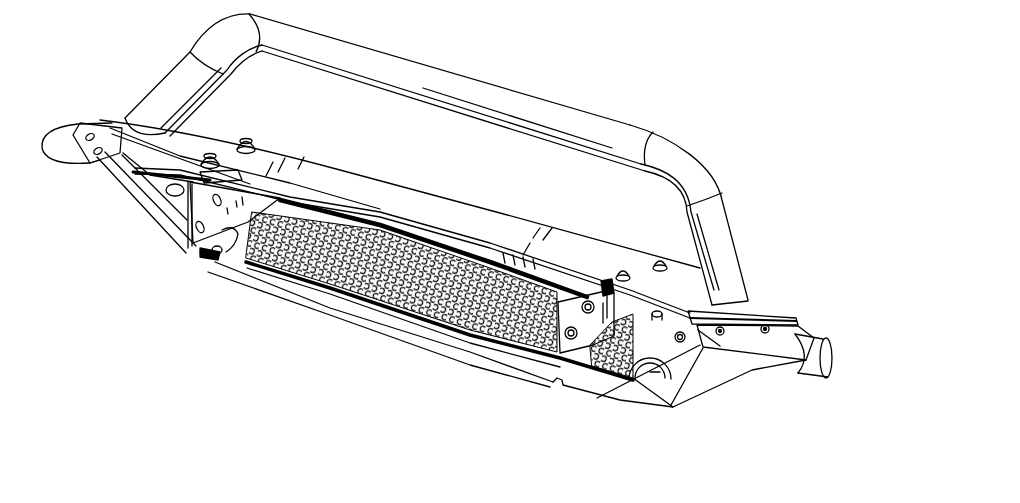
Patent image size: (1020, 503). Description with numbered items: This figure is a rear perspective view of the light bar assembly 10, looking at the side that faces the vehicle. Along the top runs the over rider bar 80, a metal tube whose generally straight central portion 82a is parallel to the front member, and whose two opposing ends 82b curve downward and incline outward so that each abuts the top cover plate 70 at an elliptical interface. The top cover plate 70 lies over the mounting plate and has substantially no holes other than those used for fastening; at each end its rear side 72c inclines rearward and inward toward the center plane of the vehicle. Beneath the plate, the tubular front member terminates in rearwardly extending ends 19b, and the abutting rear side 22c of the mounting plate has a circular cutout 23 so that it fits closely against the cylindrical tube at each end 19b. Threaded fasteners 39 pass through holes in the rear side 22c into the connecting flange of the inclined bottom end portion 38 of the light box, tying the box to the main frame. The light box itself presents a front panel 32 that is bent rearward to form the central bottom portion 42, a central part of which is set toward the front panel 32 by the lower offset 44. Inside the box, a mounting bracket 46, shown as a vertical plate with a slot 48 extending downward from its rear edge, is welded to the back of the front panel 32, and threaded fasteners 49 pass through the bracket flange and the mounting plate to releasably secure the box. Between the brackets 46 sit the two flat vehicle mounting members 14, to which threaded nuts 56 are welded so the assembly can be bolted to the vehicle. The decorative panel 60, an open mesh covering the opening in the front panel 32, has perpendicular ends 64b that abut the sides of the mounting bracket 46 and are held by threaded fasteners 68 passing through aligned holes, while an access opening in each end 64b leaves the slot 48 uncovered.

The light bar assembly 10 is at (683, 75).
The vehicle mounting member 14 is at (203, 212).
The rearwardly extending end of the front member 19b is at (824, 336).
The rear side of the mounting plate 22c is at (750, 344).
The circular cutout 23 is at (810, 370).
The front panel 32 is at (320, 303).
The inclined bottom end portion 38 is at (150, 195).
The threaded fastener 39 is at (771, 328).
The central bottom portion 42 is at (255, 296).
The lower offset 44 is at (553, 381).
The mounting bracket 46 is at (205, 258).
The slot 48 is at (598, 398).
The threaded fastener 49 is at (249, 140).
The threaded nut 56 is at (587, 300).
The decorative panel 60 is at (388, 289).
The end of the decorative panel 64b is at (636, 362).
The threaded fastener 68 is at (213, 272).
The top cover plate 70 is at (343, 163).
The rear side of the top cover plate 72c is at (753, 313).
The over rider bar 80 is at (556, 100).
The central portion of the over rider bar 82a is at (492, 90).
The end of the over rider bar 82b is at (210, 87).